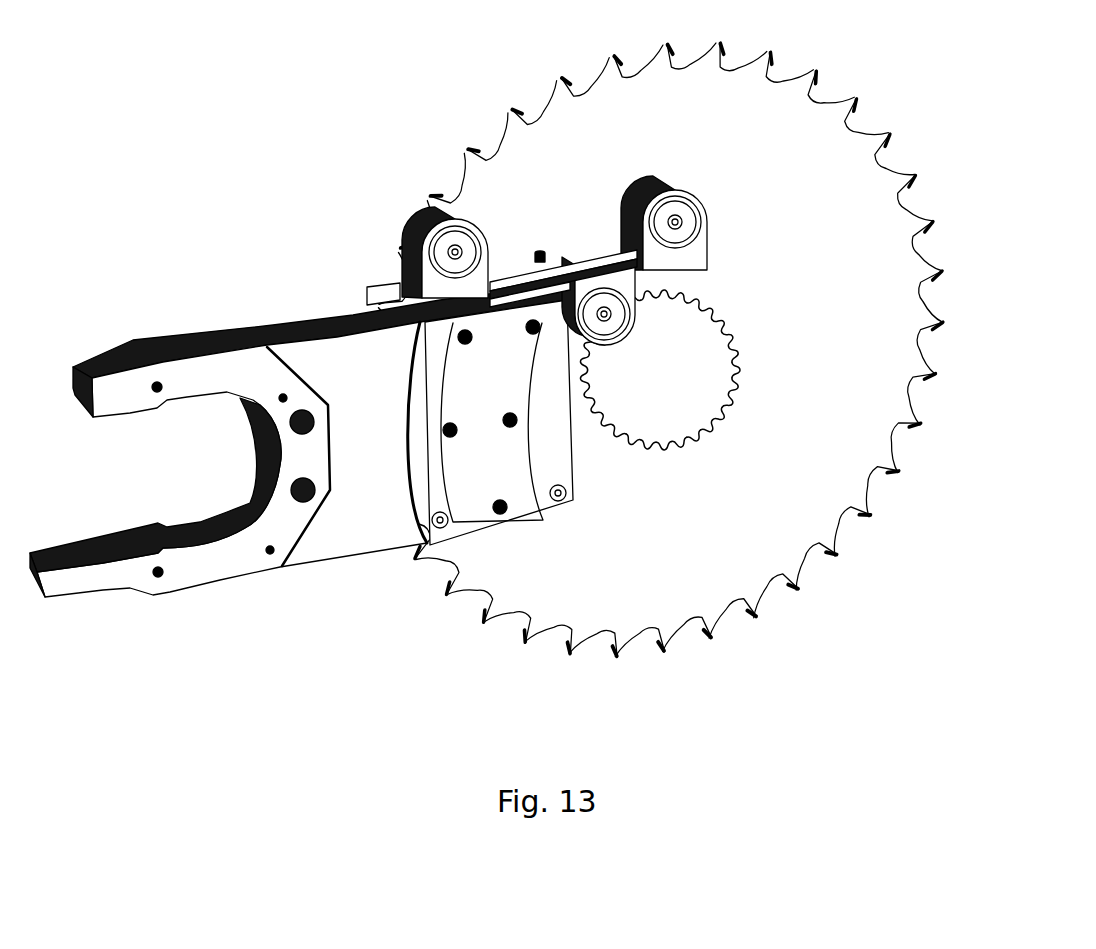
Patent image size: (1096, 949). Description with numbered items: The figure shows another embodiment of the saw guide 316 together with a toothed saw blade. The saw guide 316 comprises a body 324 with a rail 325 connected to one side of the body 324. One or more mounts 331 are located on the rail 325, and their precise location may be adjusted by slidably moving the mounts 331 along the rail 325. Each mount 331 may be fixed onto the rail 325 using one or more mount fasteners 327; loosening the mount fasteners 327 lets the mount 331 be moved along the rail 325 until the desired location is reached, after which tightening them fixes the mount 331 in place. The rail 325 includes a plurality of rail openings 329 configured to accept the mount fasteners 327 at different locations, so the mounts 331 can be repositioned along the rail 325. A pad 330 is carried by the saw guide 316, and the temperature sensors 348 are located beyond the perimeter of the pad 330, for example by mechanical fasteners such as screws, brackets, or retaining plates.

The saw guide 316 is at (183, 297).
The body 324 is at (340, 540).
The rail 325 is at (385, 290).
The mount fasteners 327 is at (536, 257).
The rail openings 329 is at (608, 252).
The pad 330 is at (525, 502).
The mounts 331 is at (487, 250).
The temperature sensors 348 is at (690, 217).